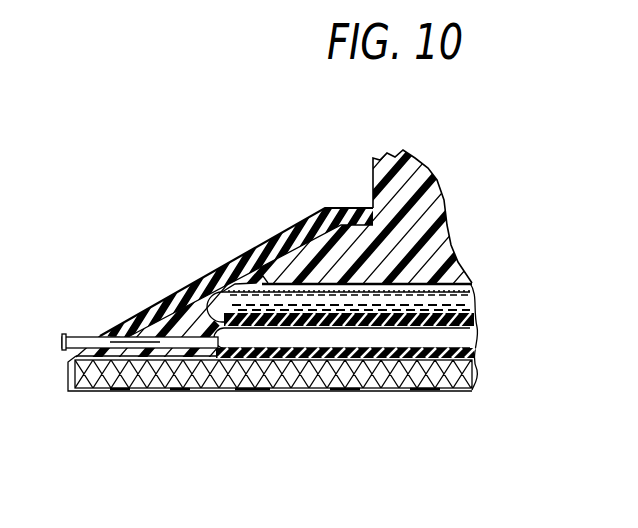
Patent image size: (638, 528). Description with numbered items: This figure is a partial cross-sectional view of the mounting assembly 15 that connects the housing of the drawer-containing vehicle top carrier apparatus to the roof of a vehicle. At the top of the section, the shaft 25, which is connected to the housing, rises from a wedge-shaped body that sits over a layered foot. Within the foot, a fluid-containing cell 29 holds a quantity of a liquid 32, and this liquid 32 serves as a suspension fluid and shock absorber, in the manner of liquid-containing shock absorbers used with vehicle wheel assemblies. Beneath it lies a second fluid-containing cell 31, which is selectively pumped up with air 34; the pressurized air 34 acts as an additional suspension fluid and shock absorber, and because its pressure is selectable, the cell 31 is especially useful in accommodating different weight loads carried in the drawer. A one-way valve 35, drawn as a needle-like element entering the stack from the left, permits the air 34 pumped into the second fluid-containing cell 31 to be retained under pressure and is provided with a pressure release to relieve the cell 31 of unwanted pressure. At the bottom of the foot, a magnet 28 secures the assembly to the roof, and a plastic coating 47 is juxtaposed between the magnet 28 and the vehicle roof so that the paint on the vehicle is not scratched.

The mounting assembly 15 is at (230, 155).
The shaft 25 is at (384, 167).
The magnet 28 is at (100, 391).
The fluid-containing cell 29 is at (470, 282).
The second fluid-containing cell 31 is at (477, 350).
The liquid 32 is at (458, 300).
The air 34 is at (460, 335).
The one-way valve 35 is at (192, 343).
The plastic coating 47 is at (157, 395).